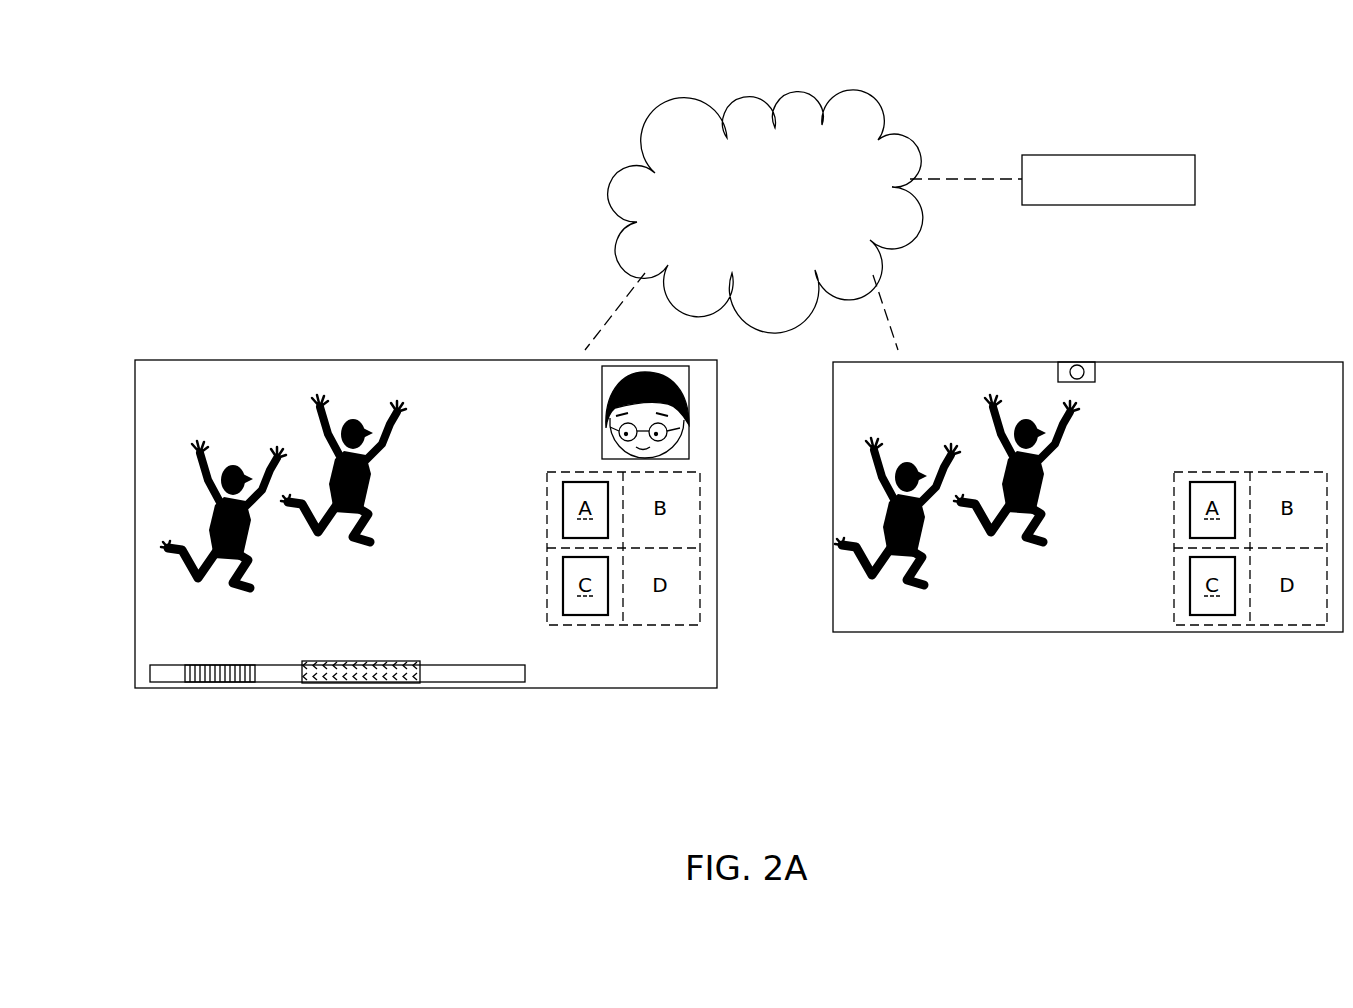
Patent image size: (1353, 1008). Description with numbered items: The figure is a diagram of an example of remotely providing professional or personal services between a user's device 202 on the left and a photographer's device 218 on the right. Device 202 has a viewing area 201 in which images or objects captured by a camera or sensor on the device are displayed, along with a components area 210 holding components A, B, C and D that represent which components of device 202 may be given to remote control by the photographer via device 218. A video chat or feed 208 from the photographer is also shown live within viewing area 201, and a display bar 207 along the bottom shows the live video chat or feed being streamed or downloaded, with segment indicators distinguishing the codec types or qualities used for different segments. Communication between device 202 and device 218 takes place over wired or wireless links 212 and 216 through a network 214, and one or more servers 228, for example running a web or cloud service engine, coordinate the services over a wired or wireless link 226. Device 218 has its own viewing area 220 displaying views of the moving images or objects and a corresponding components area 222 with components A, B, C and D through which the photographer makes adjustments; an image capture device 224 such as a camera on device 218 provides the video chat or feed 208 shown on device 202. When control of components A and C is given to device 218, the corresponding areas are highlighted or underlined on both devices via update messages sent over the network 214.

The viewing area 201 is at (226, 376).
The device 202 is at (163, 690).
The display bar 207 is at (470, 683).
The video chat or feed 208 is at (689, 436).
The components area 210 is at (686, 533).
The wired or wireless link 212 is at (614, 312).
The network 214 is at (750, 112).
The wired or wireless link 216 is at (892, 326).
The device 218 is at (1078, 633).
The viewing area 220 is at (963, 378).
The components area 222 is at (1243, 623).
The image capture device 224 is at (1080, 361).
The wired or wireless link 226 is at (955, 178).
The server 228 is at (1108, 154).